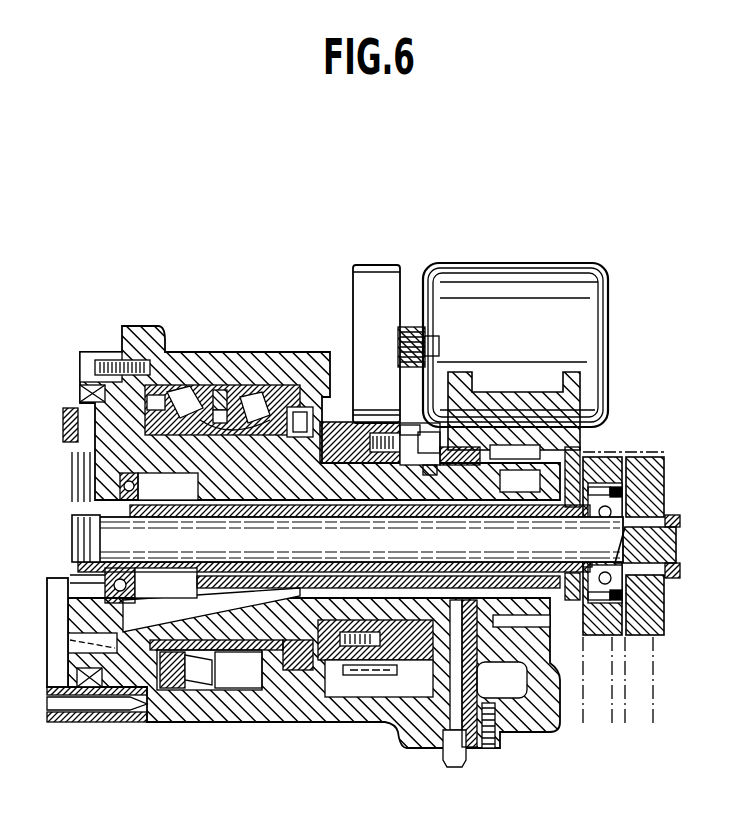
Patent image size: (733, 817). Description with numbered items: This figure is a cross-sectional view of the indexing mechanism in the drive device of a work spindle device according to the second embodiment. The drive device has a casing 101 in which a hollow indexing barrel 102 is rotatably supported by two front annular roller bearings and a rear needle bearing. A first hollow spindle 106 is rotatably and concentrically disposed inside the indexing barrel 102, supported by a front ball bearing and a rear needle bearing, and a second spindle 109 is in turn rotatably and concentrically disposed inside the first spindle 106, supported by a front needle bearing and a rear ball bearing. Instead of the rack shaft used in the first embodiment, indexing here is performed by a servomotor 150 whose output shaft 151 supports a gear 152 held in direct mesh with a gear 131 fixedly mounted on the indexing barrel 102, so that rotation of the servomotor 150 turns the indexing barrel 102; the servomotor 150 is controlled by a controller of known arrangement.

The casing 101 is at (344, 724).
The hollow indexing barrel 102 is at (287, 490).
The first hollow spindle 106 is at (560, 531).
The second spindle 109 is at (98, 531).
The gear 131 is at (375, 667).
The servomotor 150 is at (590, 299).
The output shaft 151 is at (405, 327).
The gear 152 is at (365, 320).